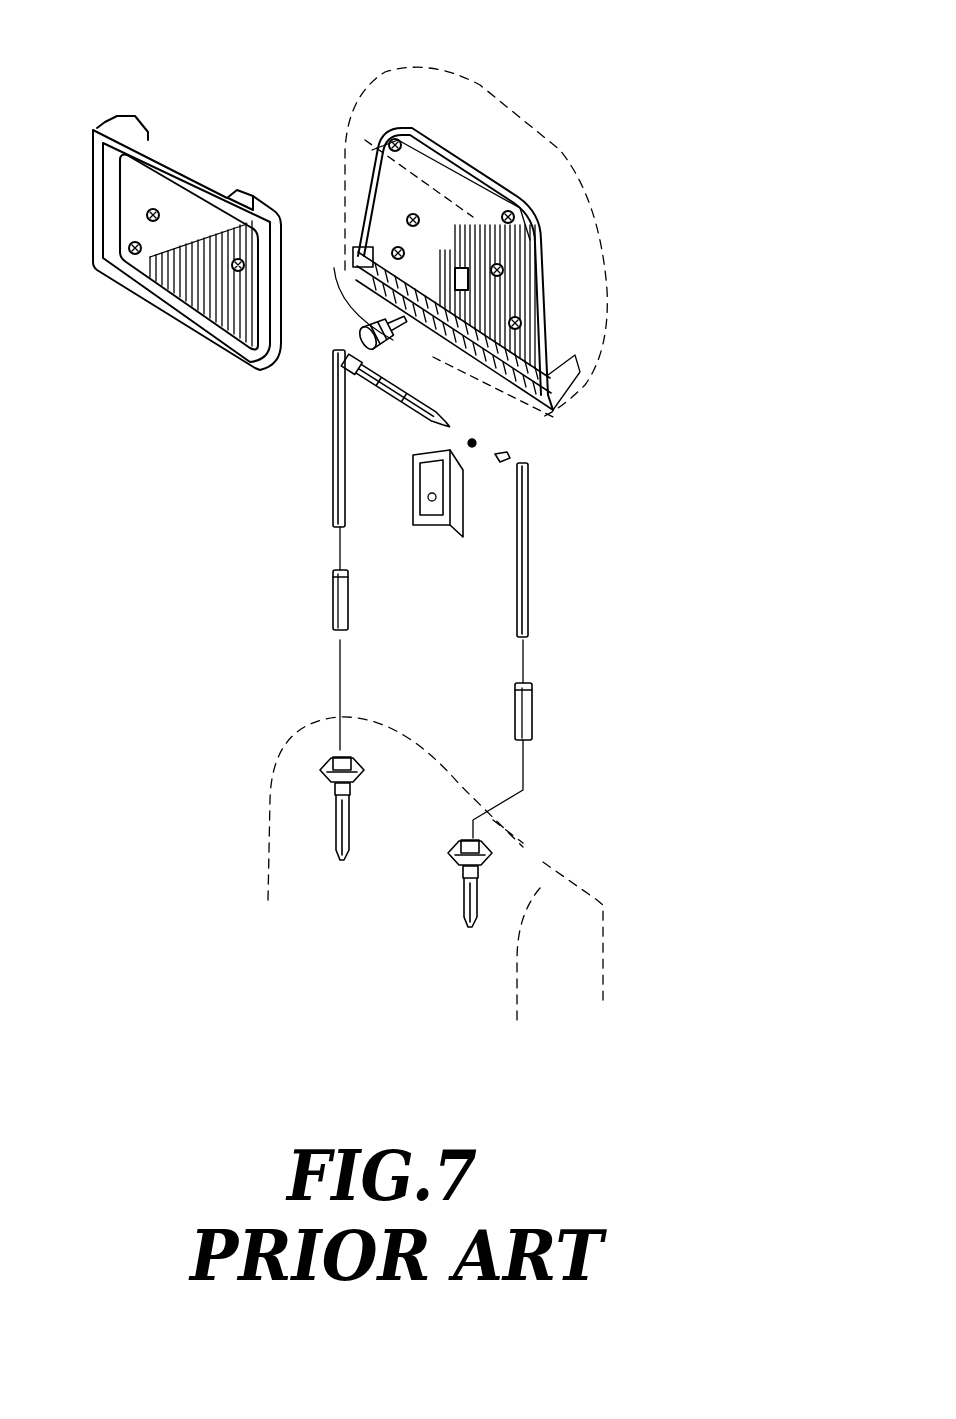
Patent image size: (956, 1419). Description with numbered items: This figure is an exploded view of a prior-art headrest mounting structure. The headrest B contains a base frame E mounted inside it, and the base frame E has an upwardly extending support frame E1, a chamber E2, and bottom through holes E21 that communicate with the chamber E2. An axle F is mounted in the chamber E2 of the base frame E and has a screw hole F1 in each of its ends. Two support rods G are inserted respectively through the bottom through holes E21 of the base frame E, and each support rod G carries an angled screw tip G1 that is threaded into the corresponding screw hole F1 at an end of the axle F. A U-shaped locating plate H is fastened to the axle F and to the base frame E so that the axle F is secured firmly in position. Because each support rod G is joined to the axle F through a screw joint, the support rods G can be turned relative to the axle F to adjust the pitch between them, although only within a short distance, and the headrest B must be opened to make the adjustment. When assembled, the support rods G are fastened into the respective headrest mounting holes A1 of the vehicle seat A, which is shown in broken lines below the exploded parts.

The vehicle seat A is at (523, 848).
The headrest mounting holes A1 is at (345, 758).
The headrest B is at (535, 130).
The base frame E is at (563, 372).
The support frame E1 is at (428, 157).
The chamber E2 is at (430, 332).
The bottom through holes E21 is at (382, 255).
The axle F is at (387, 403).
The screw hole F1 is at (333, 360).
The support rods G is at (528, 572).
The angled screw tip G1 is at (520, 458).
The U-shaped locating plate H is at (427, 517).